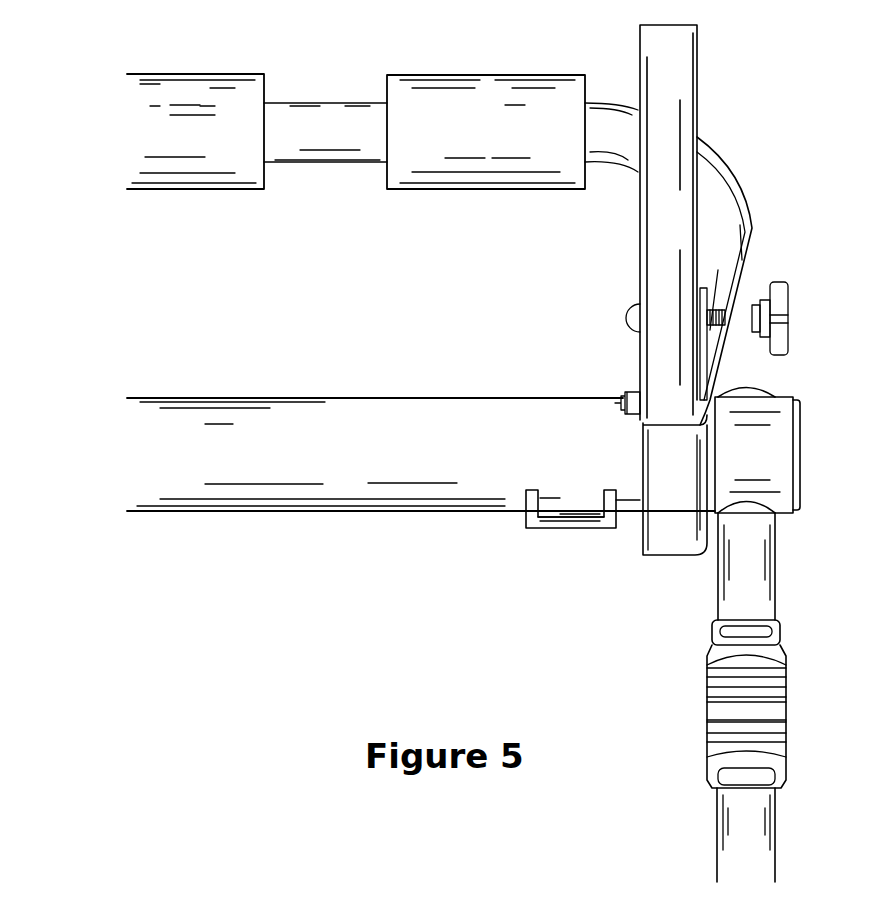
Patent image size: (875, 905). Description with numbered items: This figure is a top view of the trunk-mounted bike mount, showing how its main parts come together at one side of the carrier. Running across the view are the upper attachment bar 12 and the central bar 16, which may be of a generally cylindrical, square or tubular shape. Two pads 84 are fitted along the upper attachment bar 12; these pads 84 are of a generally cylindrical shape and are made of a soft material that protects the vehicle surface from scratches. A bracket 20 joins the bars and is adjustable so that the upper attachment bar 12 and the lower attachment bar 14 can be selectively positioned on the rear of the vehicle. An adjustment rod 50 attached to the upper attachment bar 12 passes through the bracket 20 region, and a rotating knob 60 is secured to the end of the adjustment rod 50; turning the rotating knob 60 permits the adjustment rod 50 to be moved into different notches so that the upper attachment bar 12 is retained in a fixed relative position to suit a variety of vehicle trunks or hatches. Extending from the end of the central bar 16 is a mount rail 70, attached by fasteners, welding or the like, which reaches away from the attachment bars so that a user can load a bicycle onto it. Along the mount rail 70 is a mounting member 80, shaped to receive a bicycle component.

The upper attachment bar 12 is at (667, 102).
The lower attachment bar 14 is at (717, 215).
The central bar 16 is at (362, 473).
The bracket 20 is at (670, 530).
The adjustment rod 50 is at (720, 310).
The rotating knob 60 is at (783, 307).
The mount rail 70 is at (743, 573).
The mounting member 80 is at (738, 708).
The pad 84 is at (204, 120).